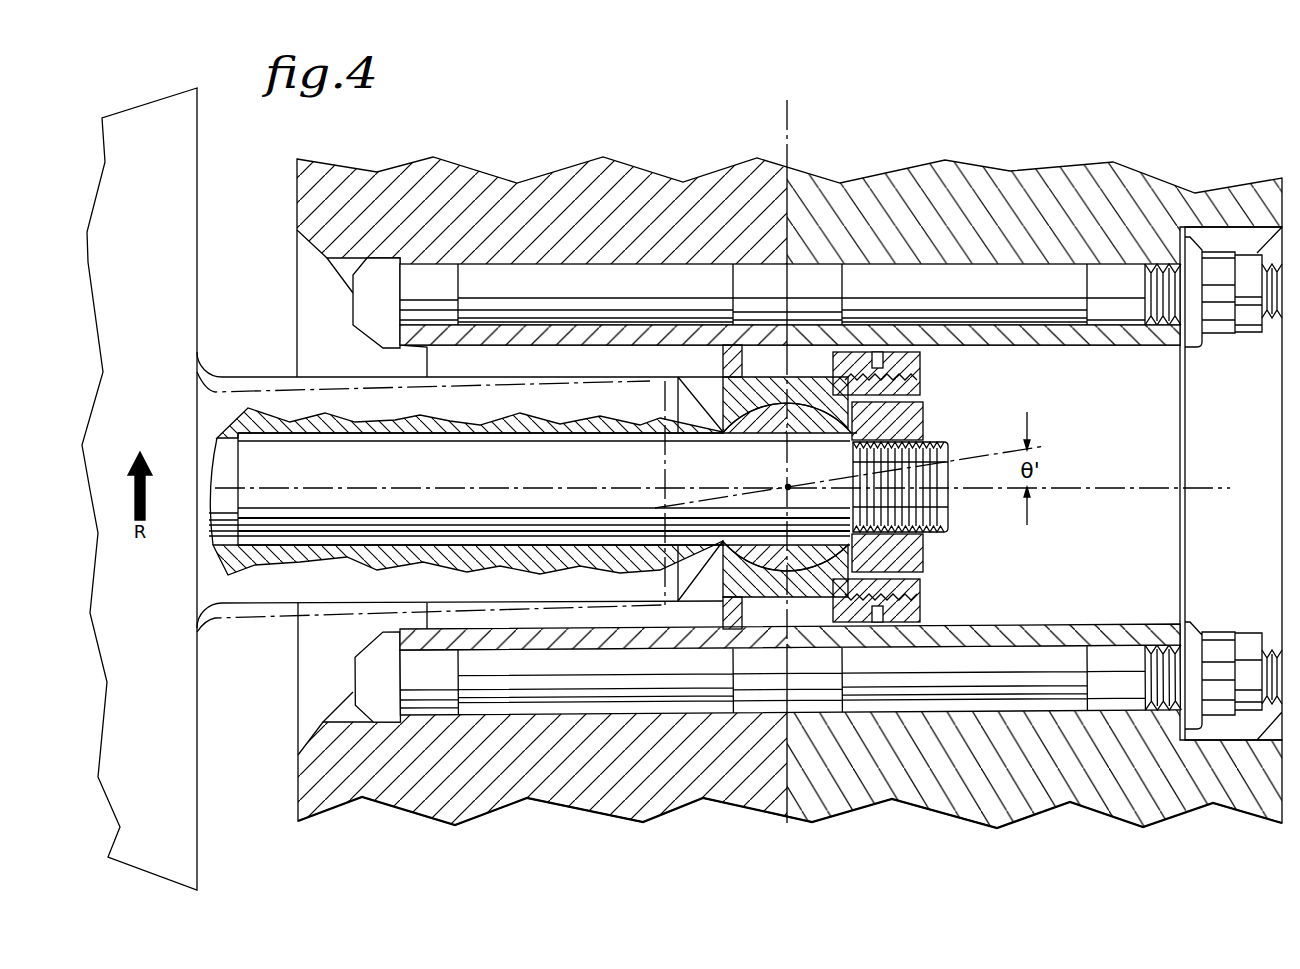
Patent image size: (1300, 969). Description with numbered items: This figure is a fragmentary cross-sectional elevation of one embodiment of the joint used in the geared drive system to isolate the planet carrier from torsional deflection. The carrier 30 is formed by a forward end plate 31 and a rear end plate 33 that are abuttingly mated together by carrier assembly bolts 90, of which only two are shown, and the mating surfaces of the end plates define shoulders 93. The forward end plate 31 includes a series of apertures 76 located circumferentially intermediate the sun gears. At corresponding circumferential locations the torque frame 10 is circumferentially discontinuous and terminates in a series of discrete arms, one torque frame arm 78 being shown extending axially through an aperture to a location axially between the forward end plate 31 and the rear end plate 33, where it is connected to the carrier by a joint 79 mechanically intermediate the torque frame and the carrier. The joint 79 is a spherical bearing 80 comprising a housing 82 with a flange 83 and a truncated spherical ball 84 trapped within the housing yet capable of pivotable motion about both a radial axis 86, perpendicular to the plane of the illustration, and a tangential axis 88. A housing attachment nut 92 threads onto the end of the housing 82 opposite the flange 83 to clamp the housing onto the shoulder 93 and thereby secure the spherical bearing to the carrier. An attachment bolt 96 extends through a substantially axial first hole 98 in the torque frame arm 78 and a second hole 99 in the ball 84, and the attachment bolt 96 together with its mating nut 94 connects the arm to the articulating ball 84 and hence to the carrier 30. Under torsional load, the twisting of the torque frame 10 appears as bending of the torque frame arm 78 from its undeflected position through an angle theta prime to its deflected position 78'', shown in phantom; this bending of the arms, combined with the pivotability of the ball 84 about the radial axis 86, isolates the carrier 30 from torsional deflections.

The torque frame 10 is at (128, 313).
The carrier 30 is at (567, 168).
The forward end plate 31 is at (297, 212).
The rear end plate 33 is at (1250, 192).
The apertures 76 is at (440, 362).
The torque frame arm 78 is at (460, 452).
The deflected position 78'' is at (431, 471).
The joint 79 is at (970, 416).
The spherical bearing 80 is at (718, 405).
The housing 82 is at (925, 590).
The flange 83 is at (723, 592).
The truncated spherical ball 84 is at (805, 548).
The radial axis 86 is at (788, 487).
The tangential axis 88 is at (787, 115).
The carrier assembly bolts 90 is at (772, 295).
The housing attachment nut 92 is at (920, 362).
The shoulders 93 is at (715, 358).
The mating nut 94 is at (950, 442).
The attachment bolt 96 is at (487, 475).
The first hole 98 is at (340, 430).
The second hole 99 is at (800, 430).